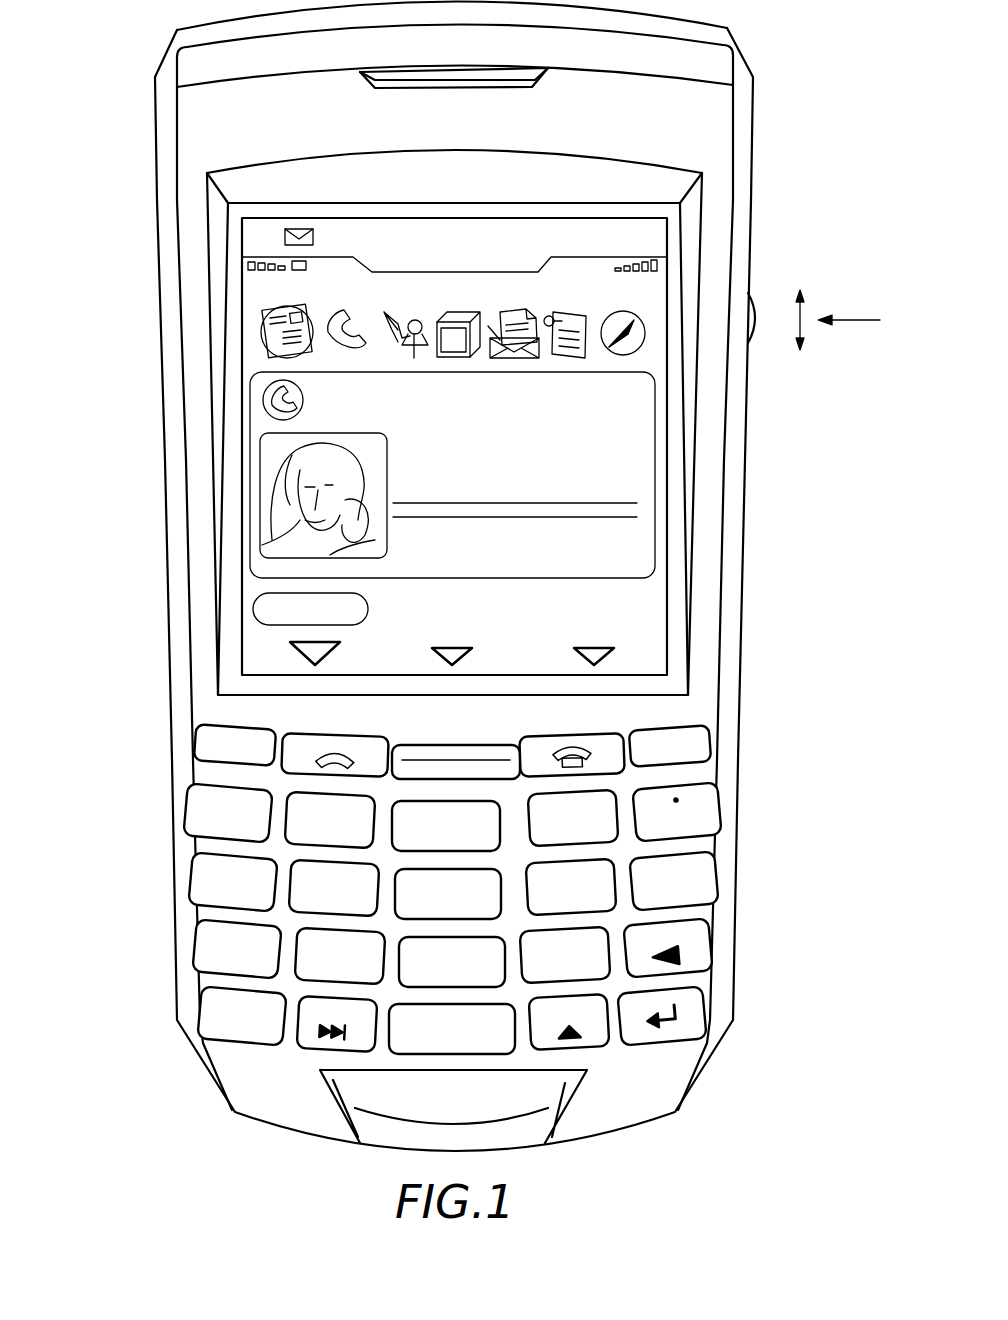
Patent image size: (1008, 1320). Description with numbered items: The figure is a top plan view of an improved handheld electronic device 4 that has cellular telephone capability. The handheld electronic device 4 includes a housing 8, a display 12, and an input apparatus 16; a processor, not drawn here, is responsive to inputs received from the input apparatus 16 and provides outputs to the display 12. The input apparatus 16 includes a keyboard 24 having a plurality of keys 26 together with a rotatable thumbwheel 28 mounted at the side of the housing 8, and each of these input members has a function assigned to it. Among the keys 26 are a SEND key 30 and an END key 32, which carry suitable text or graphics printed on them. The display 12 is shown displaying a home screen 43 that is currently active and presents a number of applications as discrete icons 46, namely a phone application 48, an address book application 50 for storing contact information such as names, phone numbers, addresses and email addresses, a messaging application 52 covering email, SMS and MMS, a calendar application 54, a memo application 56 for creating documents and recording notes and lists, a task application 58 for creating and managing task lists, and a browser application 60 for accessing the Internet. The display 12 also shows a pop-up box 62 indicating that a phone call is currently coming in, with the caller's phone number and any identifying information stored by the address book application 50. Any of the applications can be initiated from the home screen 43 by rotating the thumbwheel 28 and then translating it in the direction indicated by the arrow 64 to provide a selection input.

The handheld electronic device 4 is at (145, 96).
The housing 8 is at (733, 381).
The display 12 is at (625, 232).
The input apparatus 16 is at (740, 776).
The keyboard 24 is at (722, 838).
The keys 26 is at (195, 947).
The rotatable thumbwheel 28 is at (752, 303).
The SEND key 30 is at (322, 736).
The END key 32 is at (575, 736).
The home screen 43 is at (655, 276).
The icons 46 is at (380, 310).
The phone application 48 is at (343, 343).
The address book application 50 is at (420, 322).
The messaging application 52 is at (258, 312).
The calendar application 54 is at (467, 335).
The memo application 56 is at (530, 333).
The task application 58 is at (578, 312).
The browser application 60 is at (647, 333).
The pop-up box 62 is at (660, 458).
The arrow 64 is at (856, 320).